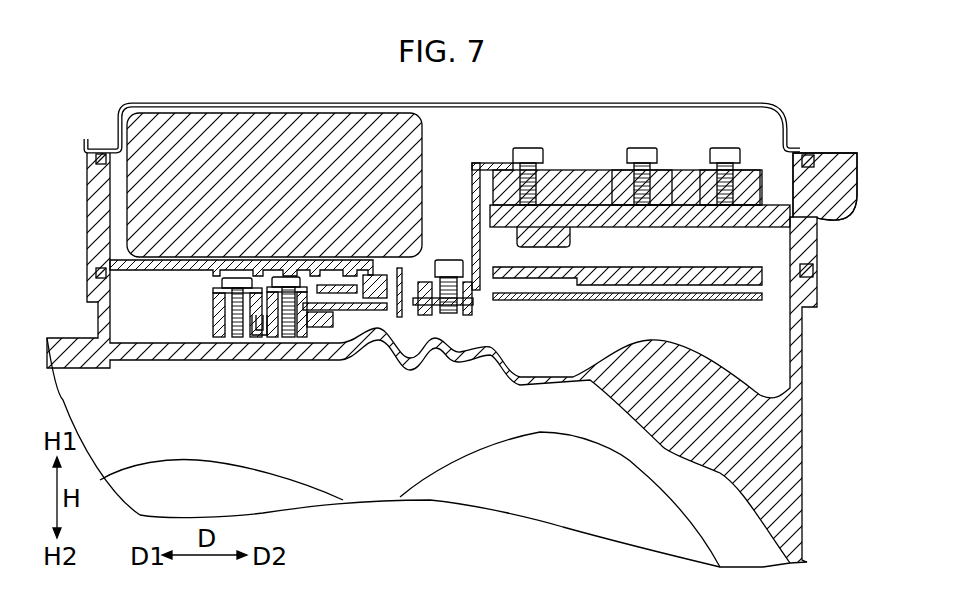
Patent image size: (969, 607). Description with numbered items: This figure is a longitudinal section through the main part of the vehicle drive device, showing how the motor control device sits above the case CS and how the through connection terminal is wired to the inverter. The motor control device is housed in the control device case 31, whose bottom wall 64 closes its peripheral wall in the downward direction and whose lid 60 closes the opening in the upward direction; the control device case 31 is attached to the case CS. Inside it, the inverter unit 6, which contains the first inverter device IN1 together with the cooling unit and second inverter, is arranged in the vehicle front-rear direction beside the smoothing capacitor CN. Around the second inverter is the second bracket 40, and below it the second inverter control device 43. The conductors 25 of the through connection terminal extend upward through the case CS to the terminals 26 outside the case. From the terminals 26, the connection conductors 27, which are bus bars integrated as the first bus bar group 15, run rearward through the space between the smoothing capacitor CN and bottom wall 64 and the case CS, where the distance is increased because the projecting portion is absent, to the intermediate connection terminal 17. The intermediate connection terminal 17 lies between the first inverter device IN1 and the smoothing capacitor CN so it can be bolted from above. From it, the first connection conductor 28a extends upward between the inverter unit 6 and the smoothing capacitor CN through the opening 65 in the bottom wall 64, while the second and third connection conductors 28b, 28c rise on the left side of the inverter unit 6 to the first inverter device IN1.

The inverter unit 6 is at (558, 155).
The first bus bar group 15 is at (417, 315).
The intermediate connection terminal 17 is at (483, 334).
The conductors 25 is at (337, 317).
The terminals 26 is at (270, 282).
The connection conductors 27 is at (398, 315).
The first connection conductor 28a is at (472, 177).
The second connection conductor 28b is at (623, 168).
The third connection conductor 28c is at (758, 149).
The control device case 31 is at (825, 219).
The second bracket 40 is at (667, 268).
The second inverter control device 43 is at (690, 300).
The lid 60 is at (767, 105).
The bottom wall 64 is at (147, 273).
The opening 65 is at (450, 246).
The smoothing capacitor CN is at (138, 138).
The case CS is at (799, 437).
The first inverter device IN1 is at (677, 170).